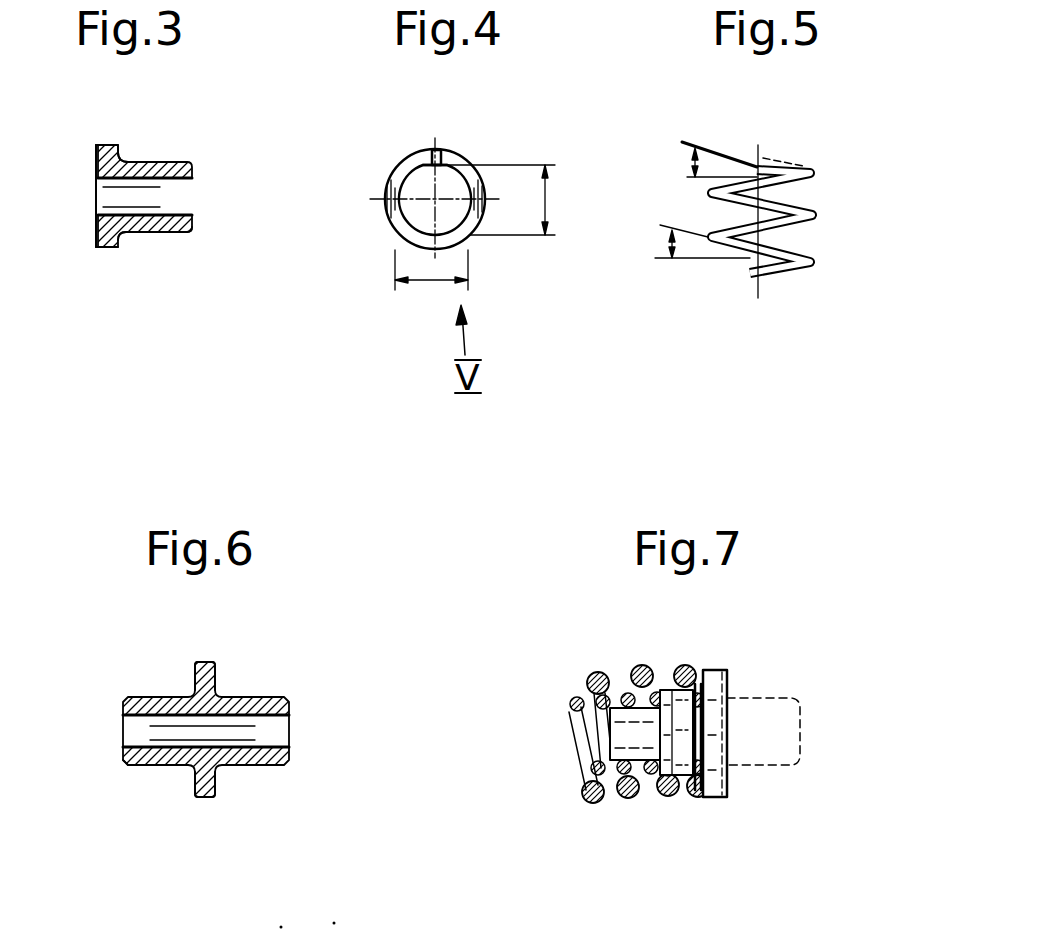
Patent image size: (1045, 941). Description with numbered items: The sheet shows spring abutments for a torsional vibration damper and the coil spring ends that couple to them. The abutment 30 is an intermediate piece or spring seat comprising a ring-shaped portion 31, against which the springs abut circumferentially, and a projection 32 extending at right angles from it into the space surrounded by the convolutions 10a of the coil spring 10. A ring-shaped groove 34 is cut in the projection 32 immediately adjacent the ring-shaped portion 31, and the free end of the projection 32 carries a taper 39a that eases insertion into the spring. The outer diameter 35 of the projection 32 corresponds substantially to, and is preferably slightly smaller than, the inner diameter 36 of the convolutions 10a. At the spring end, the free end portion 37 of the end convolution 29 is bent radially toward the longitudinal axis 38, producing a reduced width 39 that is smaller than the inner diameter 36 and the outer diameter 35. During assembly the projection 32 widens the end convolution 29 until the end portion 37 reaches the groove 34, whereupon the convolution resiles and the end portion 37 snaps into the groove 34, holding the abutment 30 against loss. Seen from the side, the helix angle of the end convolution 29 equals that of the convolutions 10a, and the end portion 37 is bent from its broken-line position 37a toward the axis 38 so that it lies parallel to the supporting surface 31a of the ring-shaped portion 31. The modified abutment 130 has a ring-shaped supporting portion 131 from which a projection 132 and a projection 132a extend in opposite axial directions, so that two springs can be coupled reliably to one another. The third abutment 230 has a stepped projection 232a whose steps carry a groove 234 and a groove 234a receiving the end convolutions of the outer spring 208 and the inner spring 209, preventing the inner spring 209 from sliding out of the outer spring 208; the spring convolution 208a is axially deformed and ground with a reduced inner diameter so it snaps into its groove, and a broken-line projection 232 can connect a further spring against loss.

In FIG. 3, the abutment 30 is at (187, 170).
In FIG. 3, the ring-shaped portion 31 is at (107, 242).
In FIG. 3, the supporting surface 31a is at (118, 158).
In FIG. 3, the projection 32 is at (162, 168).
In FIG. 3, the ring-shaped groove 34 is at (125, 237).
In FIG. 3, the outer diameter 35 is at (155, 235).
In FIG. 3, the taper 39a is at (183, 235).
In FIG. 4, the coil spring 10 is at (467, 158).
In FIG. 5, the coil spring 10 is at (813, 262).
In FIG. 4, the convolutions 10a is at (443, 152).
In FIG. 5, the convolutions 10a is at (715, 247).
In FIG. 4, the end convolution 29 is at (388, 213).
In FIG. 5, the end convolution 29 is at (745, 187).
In FIG. 4, the free end portion 37 is at (424, 158).
In FIG. 5, the free end portion 37 is at (806, 175).
In FIG. 5, the position of end portion 37a is at (762, 157).
In FIG. 4, the longitudinal axis 38 is at (436, 198).
In FIG. 5, the longitudinal axis 38 is at (758, 298).
In FIG. 4, the reduced width 39 is at (515, 200).
In FIG. 4, the inner diameter 36 is at (433, 283).
In FIG. 6, the modified abutment 130 is at (280, 697).
In FIG. 6, the ring-shaped supporting portion 131 is at (213, 664).
In FIG. 6, the projection 132 is at (272, 752).
In FIG. 6, the projection 132a is at (135, 755).
In FIG. 7, the outer spring 208 is at (599, 672).
In FIG. 7, the spring convolution 208a is at (700, 797).
In FIG. 7, the inner spring 209 is at (573, 706).
In FIG. 7, the abutment 230 is at (717, 690).
In FIG. 7, the projection 232 is at (790, 722).
In FIG. 7, the stepped projection 232a is at (627, 717).
In FIG. 7, the groove 234 is at (655, 773).
In FIG. 7, the groove 234a is at (702, 753).